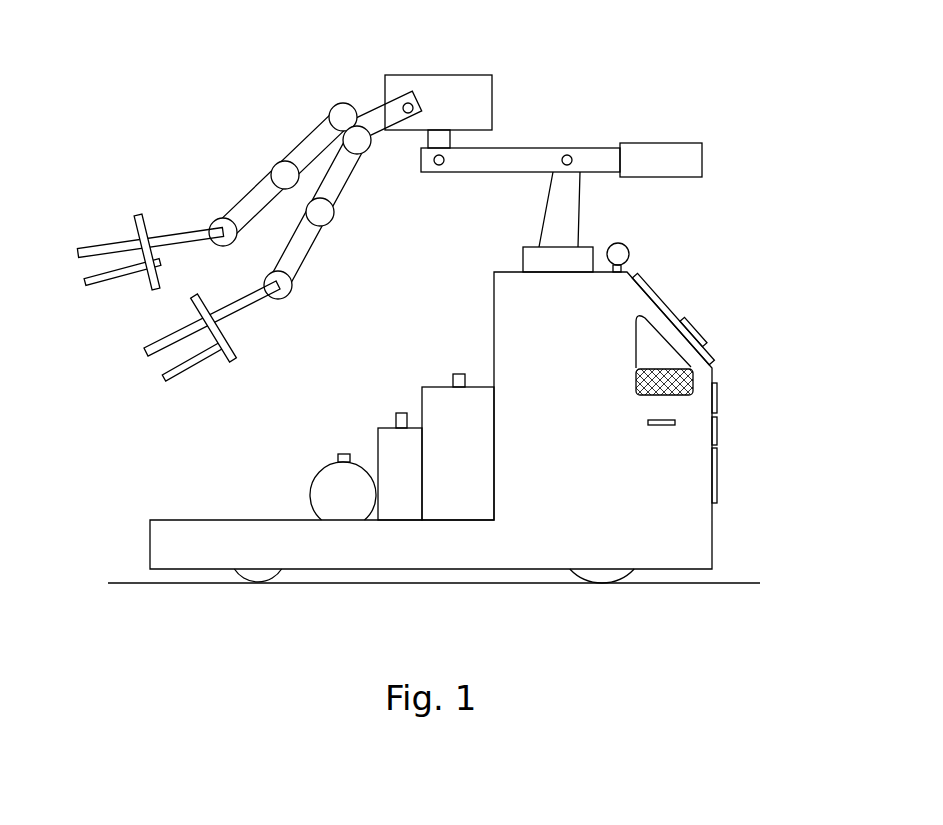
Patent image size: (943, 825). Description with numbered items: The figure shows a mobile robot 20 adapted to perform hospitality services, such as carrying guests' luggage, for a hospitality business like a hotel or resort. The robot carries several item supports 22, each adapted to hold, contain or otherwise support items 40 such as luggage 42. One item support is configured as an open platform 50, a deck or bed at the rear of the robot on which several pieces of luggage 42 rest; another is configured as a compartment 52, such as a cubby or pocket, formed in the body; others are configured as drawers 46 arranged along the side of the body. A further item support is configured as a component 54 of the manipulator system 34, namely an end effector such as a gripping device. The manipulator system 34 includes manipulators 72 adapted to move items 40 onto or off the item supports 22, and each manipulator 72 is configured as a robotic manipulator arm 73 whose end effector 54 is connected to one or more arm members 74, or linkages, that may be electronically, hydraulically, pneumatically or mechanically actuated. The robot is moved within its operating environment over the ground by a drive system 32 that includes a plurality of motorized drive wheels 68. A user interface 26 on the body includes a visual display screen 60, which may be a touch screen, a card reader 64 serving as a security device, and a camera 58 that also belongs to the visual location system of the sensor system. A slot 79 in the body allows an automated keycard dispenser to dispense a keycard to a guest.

The mobile robot 20 is at (100, 92).
The item support 22 is at (488, 420).
The user interface 26 is at (690, 305).
The drive system 32 is at (620, 598).
The manipulator system 34 is at (297, 118).
The item 40 is at (387, 370).
The luggage 42 is at (330, 470).
The drawer 46 is at (718, 395).
The platform 50 is at (204, 519).
The compartment 52 is at (635, 350).
The end effector 54 is at (108, 232).
The camera 58 is at (628, 246).
The visual display screen 60 is at (652, 289).
The card reader 64 is at (698, 334).
The motorized drive wheel 68 is at (582, 578).
The manipulator 72 is at (247, 259).
The robotic manipulator arm 73 is at (220, 195).
The arm member 74 is at (320, 252).
The slot 79 is at (651, 426).